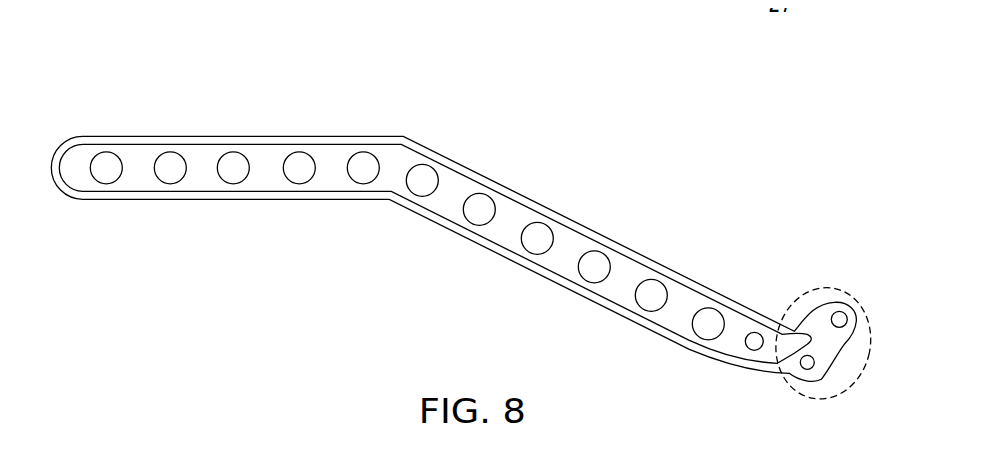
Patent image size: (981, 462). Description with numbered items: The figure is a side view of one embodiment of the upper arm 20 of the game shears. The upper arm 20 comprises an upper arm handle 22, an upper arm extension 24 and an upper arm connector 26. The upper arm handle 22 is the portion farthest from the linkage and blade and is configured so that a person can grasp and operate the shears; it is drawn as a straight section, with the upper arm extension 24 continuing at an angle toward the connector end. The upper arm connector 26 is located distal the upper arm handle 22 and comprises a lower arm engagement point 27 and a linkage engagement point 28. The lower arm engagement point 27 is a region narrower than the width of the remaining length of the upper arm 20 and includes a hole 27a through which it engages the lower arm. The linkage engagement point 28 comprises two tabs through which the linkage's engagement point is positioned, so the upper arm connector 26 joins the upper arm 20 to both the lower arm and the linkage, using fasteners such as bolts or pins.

The upper arm 20 is at (427, 52).
The upper arm handle 22 is at (425, 93).
The upper arm extension 24 is at (425, 100).
The upper arm connector 26 is at (842, 270).
The lower arm engagement point 27 is at (777, 378).
The hole 27a is at (813, 366).
The linkage engagement point 28 is at (846, 324).